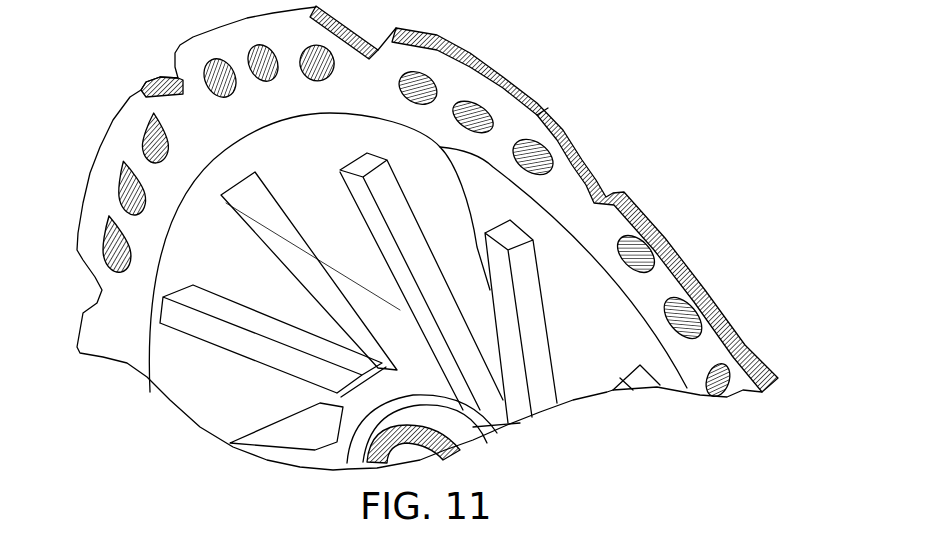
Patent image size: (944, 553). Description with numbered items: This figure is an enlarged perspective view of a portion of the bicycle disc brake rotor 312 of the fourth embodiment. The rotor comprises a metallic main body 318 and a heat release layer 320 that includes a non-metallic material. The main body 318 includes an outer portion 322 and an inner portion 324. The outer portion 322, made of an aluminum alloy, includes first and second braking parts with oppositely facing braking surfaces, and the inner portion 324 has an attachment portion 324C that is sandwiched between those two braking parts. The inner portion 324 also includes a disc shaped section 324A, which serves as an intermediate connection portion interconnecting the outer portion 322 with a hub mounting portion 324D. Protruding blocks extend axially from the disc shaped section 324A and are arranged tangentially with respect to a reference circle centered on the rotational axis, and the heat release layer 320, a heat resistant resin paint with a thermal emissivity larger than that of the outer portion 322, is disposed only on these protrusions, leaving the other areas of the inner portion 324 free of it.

The bicycle disc brake rotor 312 is at (563, 37).
The main body 318 is at (561, 203).
The heat release layer 320 is at (417, 247).
The outer portion 322 is at (665, 208).
The inner portion 324 is at (553, 205).
The disc shaped section 324A is at (587, 320).
The attachment portion 324C is at (553, 104).
The hub mounting portion 324D is at (508, 424).